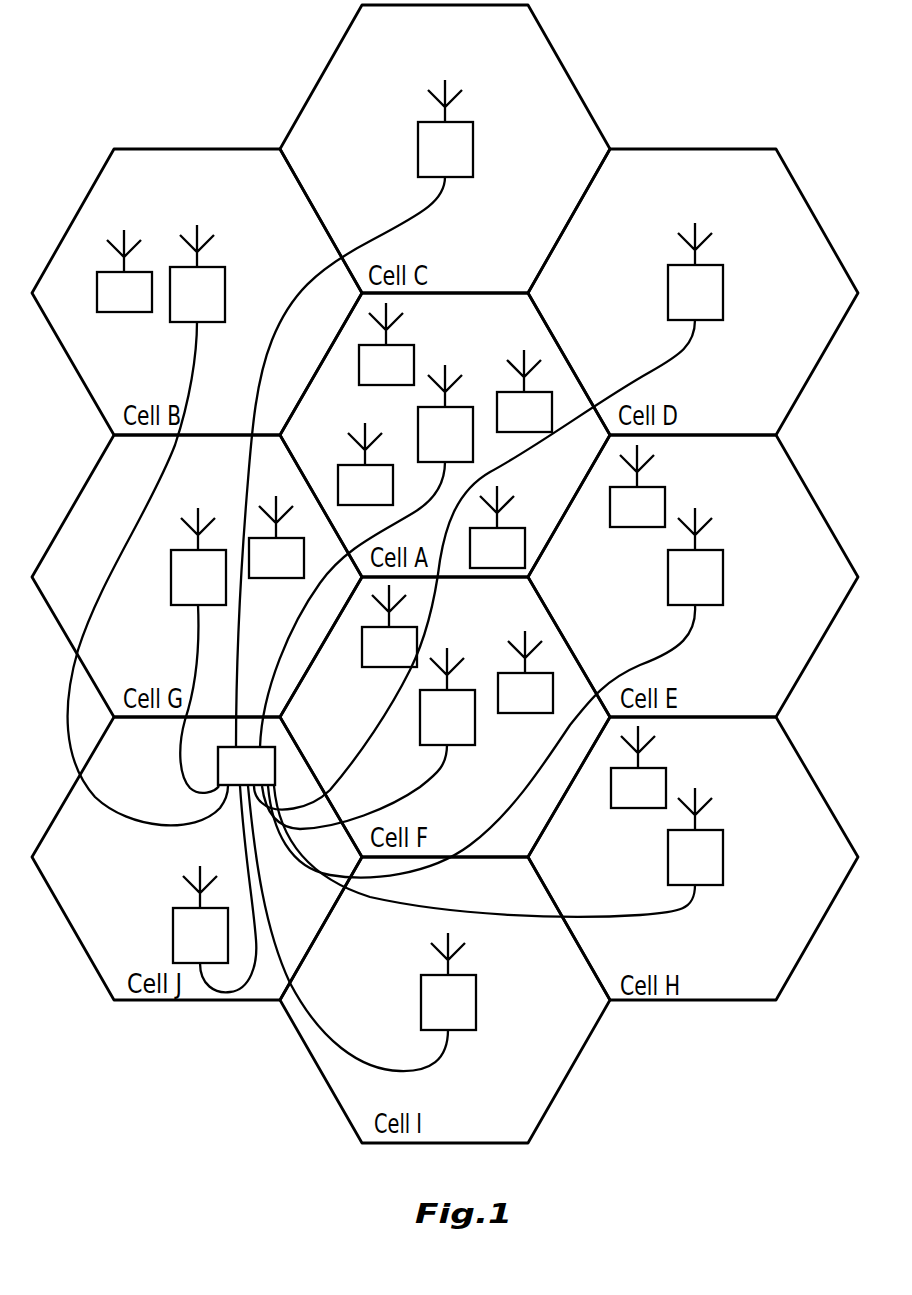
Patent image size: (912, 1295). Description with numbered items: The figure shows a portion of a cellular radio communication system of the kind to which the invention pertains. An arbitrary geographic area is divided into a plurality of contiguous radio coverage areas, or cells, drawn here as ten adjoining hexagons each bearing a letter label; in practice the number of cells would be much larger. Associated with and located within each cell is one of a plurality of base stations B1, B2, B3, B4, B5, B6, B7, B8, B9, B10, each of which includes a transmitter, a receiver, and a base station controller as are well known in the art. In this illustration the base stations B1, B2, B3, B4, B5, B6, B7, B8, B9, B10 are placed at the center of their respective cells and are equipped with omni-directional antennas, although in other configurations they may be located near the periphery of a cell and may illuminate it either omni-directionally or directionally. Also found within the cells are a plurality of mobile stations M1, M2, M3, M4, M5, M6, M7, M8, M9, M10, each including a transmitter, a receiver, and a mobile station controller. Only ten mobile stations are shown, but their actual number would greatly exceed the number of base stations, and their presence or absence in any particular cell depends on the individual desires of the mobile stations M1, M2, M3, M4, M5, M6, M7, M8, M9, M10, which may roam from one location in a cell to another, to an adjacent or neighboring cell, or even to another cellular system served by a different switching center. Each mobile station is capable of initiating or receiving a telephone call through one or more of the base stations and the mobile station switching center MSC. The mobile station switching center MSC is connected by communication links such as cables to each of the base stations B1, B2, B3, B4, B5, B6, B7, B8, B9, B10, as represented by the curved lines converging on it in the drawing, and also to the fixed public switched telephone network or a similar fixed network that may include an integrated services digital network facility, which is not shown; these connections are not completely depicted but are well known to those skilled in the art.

The mobile station switching center MSC is at (246, 766).
The base station B1 is at (366, 556).
The base station B2 is at (488, 516).
The base station B3 is at (495, 692).
The base station B4 is at (368, 738).
The base station B5 is at (198, 650).
The base station B6 is at (148, 525).
The base station B7 is at (354, 413).
The base station B8 is at (498, 851).
The base station B9 is at (362, 928).
The base station B10 is at (214, 889).
The mobile station M1 is at (638, 767).
The mobile station M2 is at (276, 537).
The mobile station M3 is at (365, 464).
The mobile station M4 is at (524, 391).
The mobile station M5 is at (637, 486).
The mobile station M6 is at (386, 344).
The mobile station M7 is at (497, 527).
The mobile station M8 is at (525, 672).
The mobile station M9 is at (389, 626).
The mobile station M10 is at (124, 271).